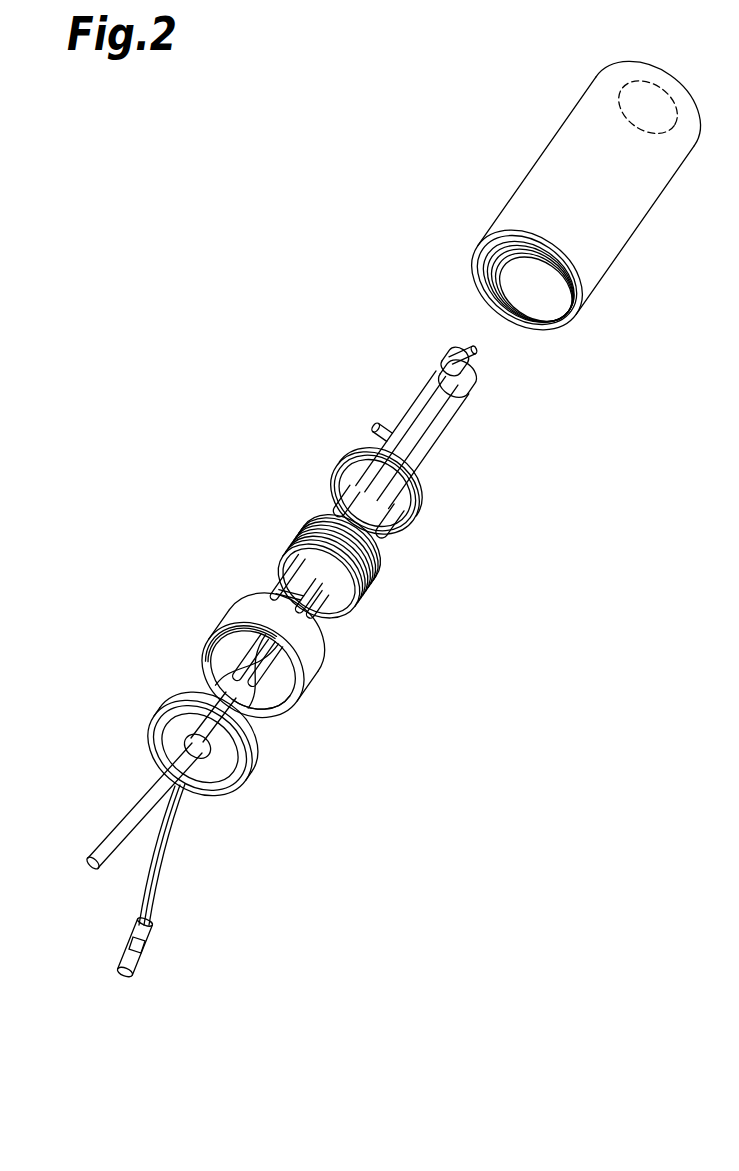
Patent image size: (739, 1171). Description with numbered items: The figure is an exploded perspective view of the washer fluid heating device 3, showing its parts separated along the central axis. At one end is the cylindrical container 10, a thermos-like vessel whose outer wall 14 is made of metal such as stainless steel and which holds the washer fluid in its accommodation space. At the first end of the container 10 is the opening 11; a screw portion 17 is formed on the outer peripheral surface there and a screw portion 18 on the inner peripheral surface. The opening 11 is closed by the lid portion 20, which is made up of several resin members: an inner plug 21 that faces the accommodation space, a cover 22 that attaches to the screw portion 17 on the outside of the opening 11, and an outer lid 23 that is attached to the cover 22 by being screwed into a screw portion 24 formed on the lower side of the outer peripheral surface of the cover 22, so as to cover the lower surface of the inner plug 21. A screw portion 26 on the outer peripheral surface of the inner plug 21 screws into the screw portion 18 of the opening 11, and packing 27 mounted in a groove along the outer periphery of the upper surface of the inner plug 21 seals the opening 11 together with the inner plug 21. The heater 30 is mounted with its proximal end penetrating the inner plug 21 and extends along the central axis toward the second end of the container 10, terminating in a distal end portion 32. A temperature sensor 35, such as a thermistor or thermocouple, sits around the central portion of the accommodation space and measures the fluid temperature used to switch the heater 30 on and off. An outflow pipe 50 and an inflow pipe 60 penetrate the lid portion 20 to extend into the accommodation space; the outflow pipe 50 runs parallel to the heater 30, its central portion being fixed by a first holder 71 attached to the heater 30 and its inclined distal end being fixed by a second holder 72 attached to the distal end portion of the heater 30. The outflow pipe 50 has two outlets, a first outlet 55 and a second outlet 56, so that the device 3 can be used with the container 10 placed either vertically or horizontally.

The washer fluid heating device 3 is at (294, 272).
The container 10 is at (566, 207).
The opening 11 is at (549, 247).
The outer wall 14 is at (586, 196).
The screw portion 17 is at (526, 280).
The screw portion 18 is at (528, 282).
The lid portion 20 is at (284, 653).
The inner plug 21 is at (295, 573).
The cover 22 is at (323, 690).
The outer lid 23 is at (231, 743).
The screw portion 24 is at (303, 589).
The screw portion 26 is at (339, 553).
The packing 27 is at (376, 491).
The heater 30 is at (408, 445).
The distal end portion 32 is at (455, 361).
The temperature sensor 35 is at (345, 502).
The outflow pipe 50 is at (413, 439).
The first outlet 55 is at (464, 354).
The second outlet 56 is at (381, 432).
The inflow pipe 60 is at (172, 798).
The first holder 71 is at (389, 522).
The second holder 72 is at (457, 378).